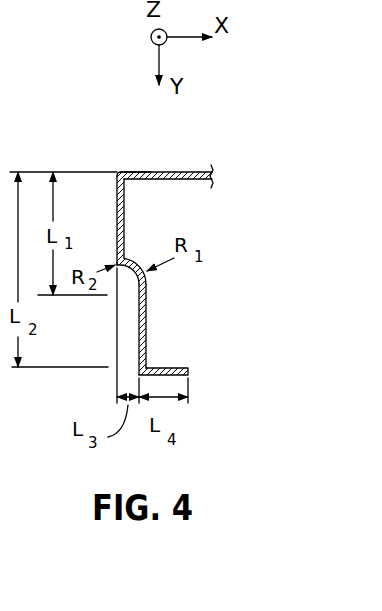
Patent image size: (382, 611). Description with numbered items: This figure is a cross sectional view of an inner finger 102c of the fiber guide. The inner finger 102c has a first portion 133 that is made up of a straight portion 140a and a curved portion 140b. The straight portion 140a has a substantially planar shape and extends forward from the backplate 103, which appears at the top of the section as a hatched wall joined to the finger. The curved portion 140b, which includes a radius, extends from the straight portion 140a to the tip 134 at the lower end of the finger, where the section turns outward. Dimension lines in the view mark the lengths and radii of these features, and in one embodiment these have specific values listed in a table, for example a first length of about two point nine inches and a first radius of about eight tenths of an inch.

The inner finger 102c is at (132, 168).
The backplate 103 is at (166, 172).
The straight portion 140a is at (125, 213).
The curved portion 140b is at (146, 301).
The first portion 133 is at (148, 322).
The tip 134 is at (150, 367).